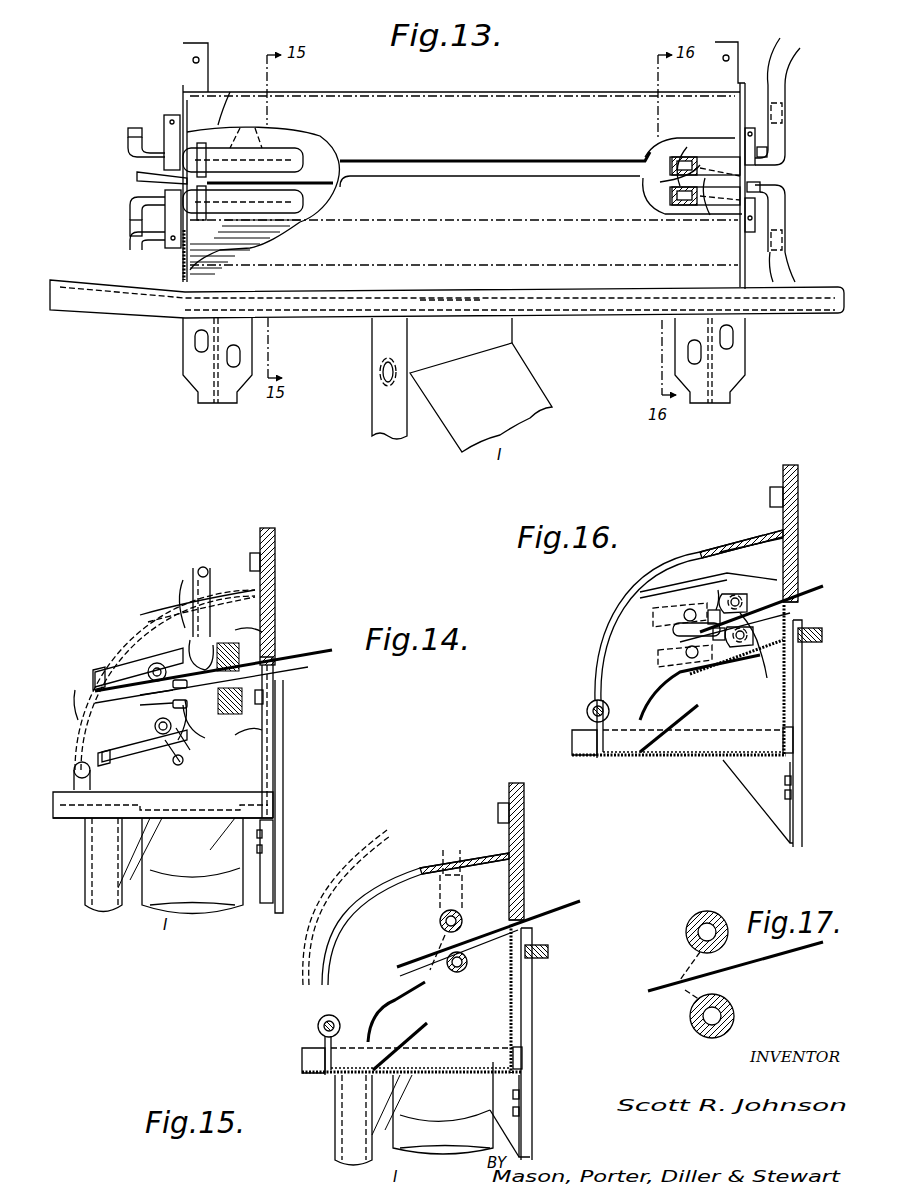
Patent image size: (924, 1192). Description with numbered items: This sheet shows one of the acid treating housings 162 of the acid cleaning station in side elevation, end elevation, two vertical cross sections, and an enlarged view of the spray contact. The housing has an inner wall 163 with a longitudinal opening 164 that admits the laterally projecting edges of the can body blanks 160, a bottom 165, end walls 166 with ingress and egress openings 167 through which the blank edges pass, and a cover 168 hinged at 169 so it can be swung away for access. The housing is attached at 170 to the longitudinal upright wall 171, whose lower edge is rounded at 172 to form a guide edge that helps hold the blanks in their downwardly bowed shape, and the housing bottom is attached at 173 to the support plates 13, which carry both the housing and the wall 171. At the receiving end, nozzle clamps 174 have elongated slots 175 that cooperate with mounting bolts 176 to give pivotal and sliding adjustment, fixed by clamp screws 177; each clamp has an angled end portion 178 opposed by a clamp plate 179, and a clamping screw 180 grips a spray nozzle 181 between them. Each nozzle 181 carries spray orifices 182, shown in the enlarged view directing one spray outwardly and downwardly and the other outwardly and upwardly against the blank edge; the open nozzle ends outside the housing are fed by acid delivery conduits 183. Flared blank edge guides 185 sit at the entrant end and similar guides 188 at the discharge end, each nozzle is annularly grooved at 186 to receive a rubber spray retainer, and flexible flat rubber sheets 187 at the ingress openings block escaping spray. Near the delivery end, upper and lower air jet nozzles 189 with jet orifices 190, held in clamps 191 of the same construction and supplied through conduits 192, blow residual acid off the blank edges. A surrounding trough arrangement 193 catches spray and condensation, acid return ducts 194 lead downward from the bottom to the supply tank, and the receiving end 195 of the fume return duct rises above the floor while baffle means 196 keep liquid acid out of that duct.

In FIG. 14, the support plates 13 is at (283, 868).
In FIG. 16, the support plates 13 is at (802, 665).
In FIG. 15, the support plates 13 is at (533, 1022).
In FIG. 13, the blanks 160 is at (342, 161).
In FIG. 14, the blanks 160 is at (222, 663).
In FIG. 16, the blanks 160 is at (759, 607).
In FIG. 15, the blanks 160 is at (500, 927).
In FIG. 17, the blanks 160 is at (658, 988).
In FIG. 13, the acid treating housing 162 is at (561, 91).
In FIG. 14, the acid treating housing 162 is at (77, 686).
In FIG. 16, the acid treating housing 162 is at (590, 745).
In FIG. 15, the acid treating housing 162 is at (302, 1066).
In FIG. 13, the inner wall 163 is at (440, 100).
In FIG. 14, the inner wall 163 is at (268, 620).
In FIG. 16, the inner wall 163 is at (783, 575).
In FIG. 15, the inner wall 163 is at (512, 905).
In FIG. 13, the longitudinal opening 164 is at (558, 173).
In FIG. 14, the longitudinal opening 164 is at (265, 677).
In FIG. 16, the longitudinal opening 164 is at (792, 614).
In FIG. 15, the longitudinal opening 164 is at (520, 931).
In FIG. 13, the bottom 165 is at (605, 318).
In FIG. 14, the bottom 165 is at (130, 822).
In FIG. 16, the bottom 165 is at (672, 756).
In FIG. 15, the bottom 165 is at (372, 1076).
In FIG. 13, the end walls 166 is at (776, 110).
In FIG. 14, the end walls 166 is at (160, 614).
In FIG. 16, the end walls 166 is at (680, 555).
In FIG. 15, the end walls 166 is at (418, 880).
In FIG. 13, the ingress and egress openings 167 is at (172, 115).
In FIG. 14, the ingress and egress openings 167 is at (248, 630).
In FIG. 16, the ingress and egress openings 167 is at (760, 588).
In FIG. 14, the cover 168 is at (80, 740).
In FIG. 16, the cover 168 is at (606, 616).
In FIG. 15, the cover 168 is at (362, 890).
In FIG. 14, the hinge 169 is at (80, 762).
In FIG. 16, the hinge 169 is at (590, 702).
In FIG. 15, the hinge 169 is at (318, 1025).
In FIG. 13, the attachment 170 is at (183, 54).
In FIG. 14, the attachment 170 is at (258, 553).
In FIG. 16, the attachment 170 is at (770, 494).
In FIG. 15, the attachment 170 is at (498, 808).
In FIG. 14, the longitudinal upright wall 171 is at (275, 536).
In FIG. 16, the longitudinal upright wall 171 is at (783, 468).
In FIG. 15, the longitudinal upright wall 171 is at (509, 786).
In FIG. 14, the rounded guide edge 172 is at (275, 655).
In FIG. 16, the rounded guide edge 172 is at (797, 595).
In FIG. 15, the rounded guide edge 172 is at (522, 915).
In FIG. 13, the bottom attachment 173 is at (192, 358).
In FIG. 14, the bottom attachment 173 is at (273, 834).
In FIG. 16, the bottom attachment 173 is at (791, 794).
In FIG. 15, the bottom attachment 173 is at (520, 1100).
In FIG. 13, the nozzle clamps 174 is at (160, 140).
In FIG. 14, the nozzle clamps 174 is at (97, 668).
In FIG. 14, the elongated slots 175 is at (135, 670).
In FIG. 13, the mounting bolts 176 is at (133, 212).
In FIG. 14, the mounting bolts 176 is at (157, 663).
In FIG. 14, the clamp screws 177 is at (83, 672).
In FIG. 14, the angled end portion 178 is at (190, 630).
In FIG. 14, the clamp plate 179 is at (222, 643).
In FIG. 14, the clamping screw 180 is at (183, 600).
In FIG. 13, the spray nozzle 181 is at (308, 148).
In FIG. 15, the spray nozzle 181 is at (440, 920).
In FIG. 17, the spray nozzle 181 is at (688, 918).
In FIG. 13, the spray orifices 182 is at (247, 129).
In FIG. 15, the spray orifices 182 is at (447, 957).
In FIG. 17, the spray orifices 182 is at (695, 952).
In FIG. 13, the acid delivery conduits 183 is at (128, 135).
In FIG. 14, the acid delivery conduits 183 is at (215, 562).
In FIG. 13, the flared blank edge guides 185 is at (137, 178).
In FIG. 14, the flared blank edge guides 185 is at (160, 700).
In FIG. 13, the annular groove 186 is at (214, 160).
In FIG. 16, the annular groove 186 is at (714, 608).
In FIG. 13, the flat rubber sheets 187 is at (202, 143).
In FIG. 14, the flat rubber sheets 187 is at (263, 700).
In FIG. 13, the flared blank edge guides 188 is at (720, 205).
In FIG. 13, the air jet nozzles 189 is at (660, 182).
In FIG. 16, the air jet nozzles 189 is at (760, 665).
In FIG. 13, the jet orifices 190 is at (688, 157).
In FIG. 13, the clamps 191 is at (767, 160).
In FIG. 16, the clamps 191 is at (676, 612).
In FIG. 13, the conduits 192 is at (790, 72).
In FIG. 13, the spray and condensation catching trough arrangement 193 is at (152, 314).
In FIG. 14, the spray and condensation catching trough arrangement 193 is at (72, 818).
In FIG. 16, the spray and condensation catching trough arrangement 193 is at (572, 730).
In FIG. 15, the spray and condensation catching trough arrangement 193 is at (302, 1050).
In FIG. 13, the acid return ducts 194 is at (380, 352).
In FIG. 14, the acid return ducts 194 is at (140, 870).
In FIG. 15, the acid return ducts 194 is at (370, 1125).
In FIG. 13, the receiving end 195 is at (497, 300).
In FIG. 13, the baffle means 196 is at (255, 255).
In FIG. 16, the baffle means 196 is at (692, 710).
In FIG. 15, the baffle means 196 is at (392, 1012).